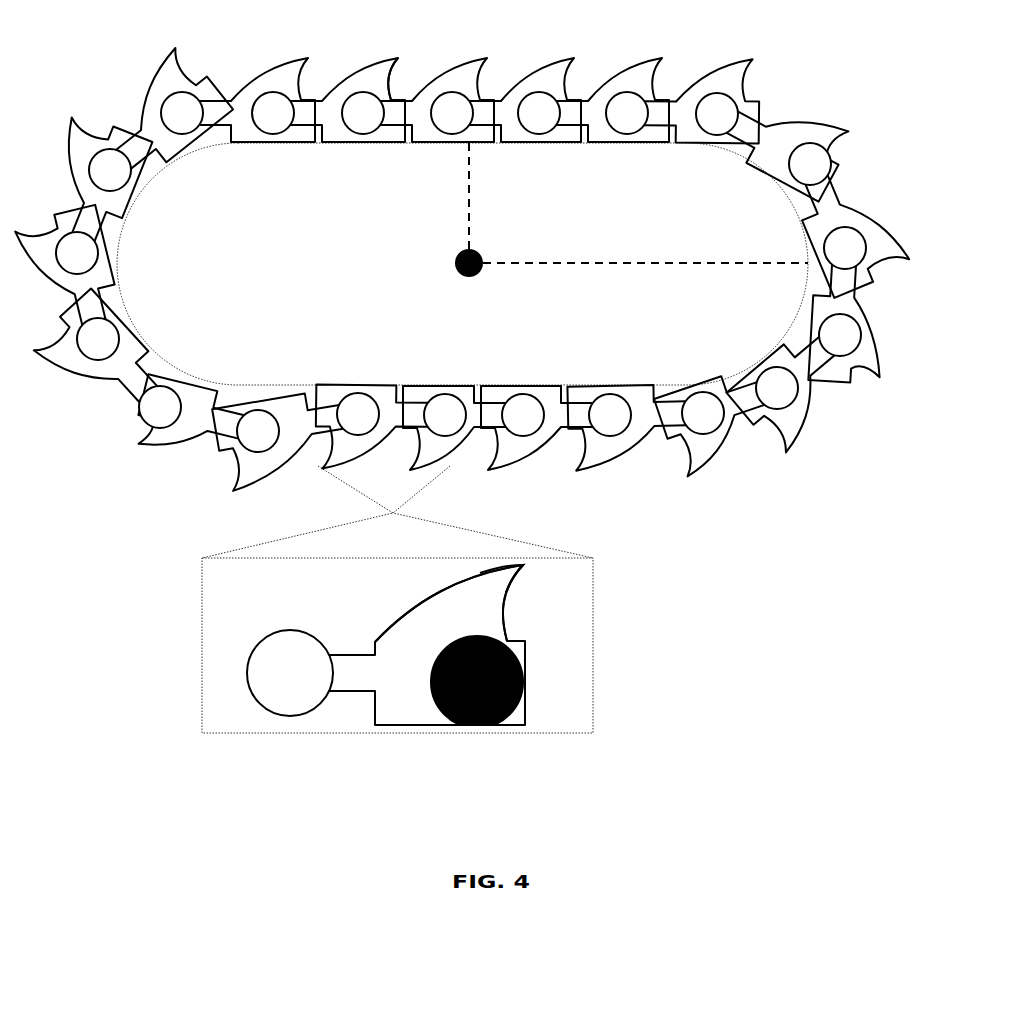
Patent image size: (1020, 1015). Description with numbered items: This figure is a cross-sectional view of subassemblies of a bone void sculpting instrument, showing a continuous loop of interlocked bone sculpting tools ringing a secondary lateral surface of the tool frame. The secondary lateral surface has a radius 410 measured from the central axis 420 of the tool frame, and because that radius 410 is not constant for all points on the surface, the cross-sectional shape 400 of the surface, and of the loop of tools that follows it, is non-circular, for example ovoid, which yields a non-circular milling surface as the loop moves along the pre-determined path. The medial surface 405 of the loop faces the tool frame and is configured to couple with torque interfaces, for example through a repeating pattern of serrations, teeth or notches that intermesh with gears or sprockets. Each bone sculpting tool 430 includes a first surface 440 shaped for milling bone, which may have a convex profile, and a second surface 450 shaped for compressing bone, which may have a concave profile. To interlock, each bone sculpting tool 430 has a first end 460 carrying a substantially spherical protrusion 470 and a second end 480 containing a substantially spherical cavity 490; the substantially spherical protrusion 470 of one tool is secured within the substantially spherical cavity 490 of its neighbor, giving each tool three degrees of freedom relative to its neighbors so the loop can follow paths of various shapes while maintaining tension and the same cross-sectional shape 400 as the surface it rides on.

The cross-sectional shape 400 is at (463, 261).
The medial surface 405 is at (108, 252).
The radius 410 is at (660, 263).
The central axis 420 is at (469, 277).
The bone sculpting tool 430 is at (341, 80).
The first surface 440 is at (432, 600).
The second surface 450 is at (504, 595).
The first end 460 is at (278, 112).
The substantially spherical protrusion 470 is at (268, 672).
The second end 480 is at (392, 102).
The substantially spherical cavity 490 is at (467, 671).